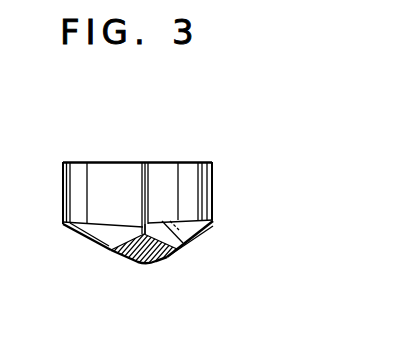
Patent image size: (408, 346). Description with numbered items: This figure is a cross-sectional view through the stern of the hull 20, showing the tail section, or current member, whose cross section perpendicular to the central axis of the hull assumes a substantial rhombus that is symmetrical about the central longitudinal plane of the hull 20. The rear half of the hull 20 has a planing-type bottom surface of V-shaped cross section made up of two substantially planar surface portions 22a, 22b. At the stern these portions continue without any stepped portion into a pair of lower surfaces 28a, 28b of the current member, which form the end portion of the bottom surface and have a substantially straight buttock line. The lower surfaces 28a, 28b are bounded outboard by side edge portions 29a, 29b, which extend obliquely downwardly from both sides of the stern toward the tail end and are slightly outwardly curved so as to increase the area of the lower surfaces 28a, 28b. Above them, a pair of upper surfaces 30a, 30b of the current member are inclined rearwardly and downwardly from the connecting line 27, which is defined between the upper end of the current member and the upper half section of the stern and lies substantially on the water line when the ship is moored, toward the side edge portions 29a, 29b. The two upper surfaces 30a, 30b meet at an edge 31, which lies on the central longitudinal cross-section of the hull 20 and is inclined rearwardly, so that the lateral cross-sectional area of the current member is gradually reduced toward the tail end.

The hull 20 is at (101, 151).
The planar surface portion 22a is at (90, 243).
The planar surface portion 22b is at (190, 240).
The connecting line 27 is at (161, 221).
The lower surface of the current member 28a is at (80, 231).
The lower surface of the current member 28b is at (152, 263).
The side edge portion 29a is at (88, 240).
The side edge portion 29b is at (200, 233).
The upper surface of the current member 30a is at (105, 240).
The upper surface of the current member 30b is at (178, 231).
The edge 31 is at (146, 230).